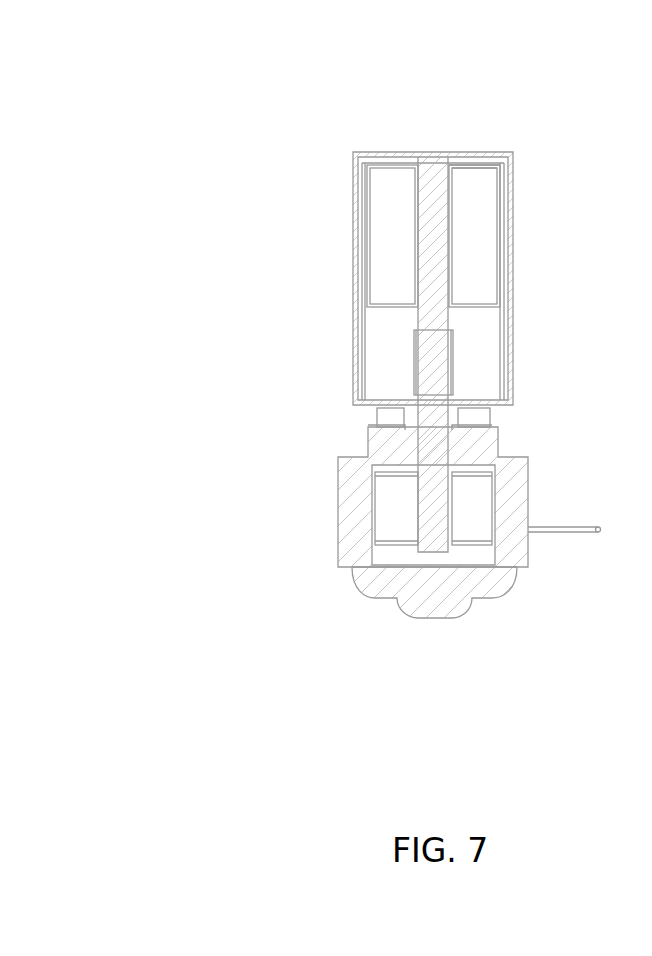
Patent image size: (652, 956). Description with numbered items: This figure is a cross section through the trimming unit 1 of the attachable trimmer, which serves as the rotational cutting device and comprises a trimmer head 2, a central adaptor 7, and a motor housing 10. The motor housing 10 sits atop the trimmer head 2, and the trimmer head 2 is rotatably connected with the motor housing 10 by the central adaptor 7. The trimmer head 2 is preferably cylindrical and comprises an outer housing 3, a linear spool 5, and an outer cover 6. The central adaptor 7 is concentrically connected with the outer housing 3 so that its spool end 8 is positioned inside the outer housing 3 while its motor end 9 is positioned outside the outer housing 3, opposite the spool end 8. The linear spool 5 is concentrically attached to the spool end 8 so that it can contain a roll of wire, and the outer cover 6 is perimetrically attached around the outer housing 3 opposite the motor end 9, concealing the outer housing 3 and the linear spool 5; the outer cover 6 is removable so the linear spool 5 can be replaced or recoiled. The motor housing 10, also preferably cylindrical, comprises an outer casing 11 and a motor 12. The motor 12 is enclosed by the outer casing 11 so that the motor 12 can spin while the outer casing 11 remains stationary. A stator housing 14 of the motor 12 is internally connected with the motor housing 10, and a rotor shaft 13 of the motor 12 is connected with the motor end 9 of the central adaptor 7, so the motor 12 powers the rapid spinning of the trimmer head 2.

The trimming unit 1 is at (377, 373).
The trimmer head 2 is at (431, 546).
The outer housing 3 is at (517, 475).
The linear spool 5 is at (402, 543).
The outer cover 6 is at (492, 582).
The central adaptor 7 is at (435, 402).
The spool end 8 is at (430, 543).
The motor end 9 is at (437, 342).
The motor housing 10 is at (443, 233).
The outer casing 11 is at (512, 188).
The motor 12 is at (492, 228).
The rotor shaft 13 is at (432, 165).
The stator housing 14 is at (481, 164).